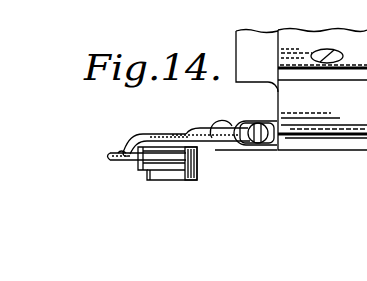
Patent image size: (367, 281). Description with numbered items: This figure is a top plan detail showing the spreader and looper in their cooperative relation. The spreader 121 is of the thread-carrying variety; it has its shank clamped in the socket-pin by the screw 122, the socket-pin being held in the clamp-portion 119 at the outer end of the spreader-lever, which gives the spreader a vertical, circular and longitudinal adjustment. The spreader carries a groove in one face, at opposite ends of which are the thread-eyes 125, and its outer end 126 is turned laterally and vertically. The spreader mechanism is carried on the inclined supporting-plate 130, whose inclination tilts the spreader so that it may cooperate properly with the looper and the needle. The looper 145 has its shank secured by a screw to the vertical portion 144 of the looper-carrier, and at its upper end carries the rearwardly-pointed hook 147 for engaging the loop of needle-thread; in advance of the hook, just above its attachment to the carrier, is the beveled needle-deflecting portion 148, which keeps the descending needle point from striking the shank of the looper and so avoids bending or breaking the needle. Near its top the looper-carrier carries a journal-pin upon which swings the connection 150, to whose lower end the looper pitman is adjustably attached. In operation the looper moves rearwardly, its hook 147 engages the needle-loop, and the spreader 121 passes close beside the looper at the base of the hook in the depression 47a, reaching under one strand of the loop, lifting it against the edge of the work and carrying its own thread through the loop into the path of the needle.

The depression 47a is at (121, 149).
The clamp-portion 119 is at (262, 146).
The spreader 121 is at (214, 130).
The screw 122 is at (254, 126).
The thread-eyes 125 is at (143, 133).
The outer end of spreader 126 is at (128, 147).
The inclined supporting-plate 130 is at (366, 147).
The vertical portion of looper-carrier 144 is at (184, 143).
The looper 145 is at (138, 162).
The rearwardly-pointed hook 147 is at (130, 160).
The beveled needle-deflecting portion 148 is at (163, 157).
The connection 150 is at (182, 176).